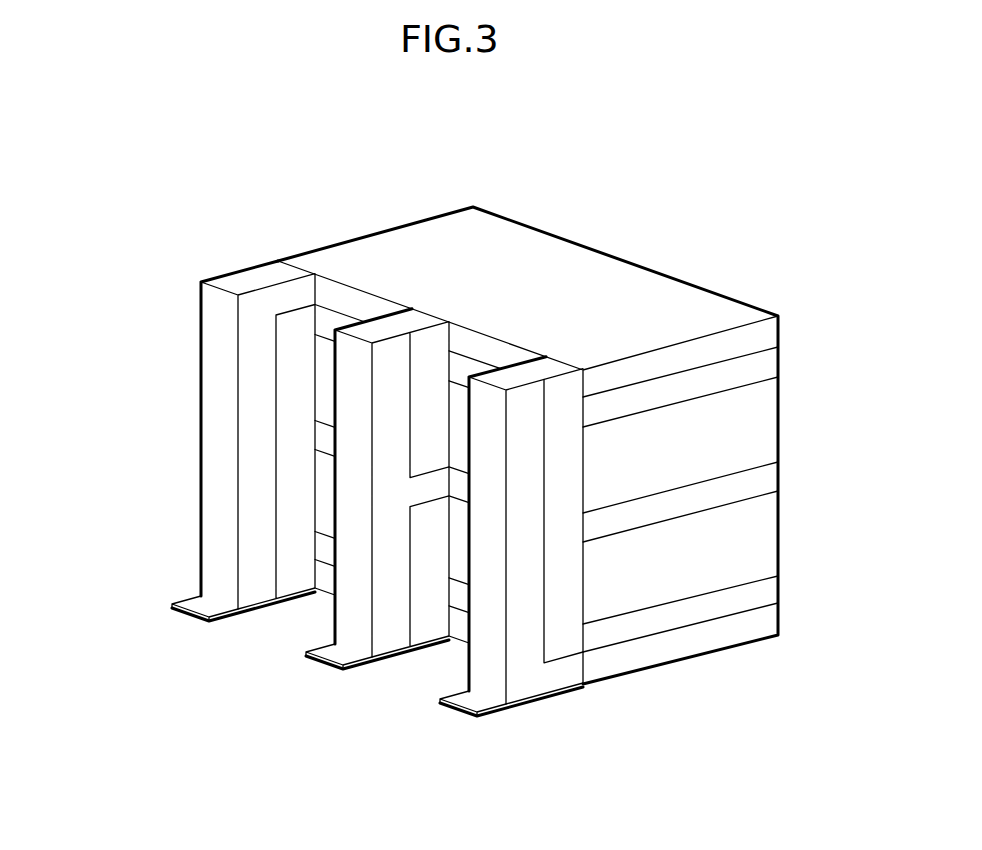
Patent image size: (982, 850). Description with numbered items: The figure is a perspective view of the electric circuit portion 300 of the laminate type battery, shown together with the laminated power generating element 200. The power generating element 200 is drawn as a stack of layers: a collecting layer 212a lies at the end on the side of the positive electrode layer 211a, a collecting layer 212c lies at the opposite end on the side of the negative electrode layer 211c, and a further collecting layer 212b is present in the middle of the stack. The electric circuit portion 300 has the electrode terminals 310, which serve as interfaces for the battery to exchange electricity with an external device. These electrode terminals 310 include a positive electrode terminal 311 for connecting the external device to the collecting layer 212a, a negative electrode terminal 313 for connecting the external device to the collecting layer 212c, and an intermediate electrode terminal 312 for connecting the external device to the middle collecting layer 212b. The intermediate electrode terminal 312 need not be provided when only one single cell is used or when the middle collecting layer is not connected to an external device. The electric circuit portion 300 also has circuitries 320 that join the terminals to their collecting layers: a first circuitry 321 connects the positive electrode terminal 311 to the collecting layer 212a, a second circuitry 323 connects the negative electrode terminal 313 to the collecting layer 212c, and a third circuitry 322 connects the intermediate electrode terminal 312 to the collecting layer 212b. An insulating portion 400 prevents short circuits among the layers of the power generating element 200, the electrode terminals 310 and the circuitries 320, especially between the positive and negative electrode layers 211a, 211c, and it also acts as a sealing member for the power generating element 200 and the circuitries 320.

The power generating element 200 is at (609, 257).
The collecting layer 212a is at (781, 331).
The positive electrode layer 211a is at (781, 361).
The collecting layer 212b is at (781, 478).
The negative electrode layer 211c is at (781, 593).
The collecting layer 212c is at (781, 623).
The electric circuit portion 300 is at (80, 405).
The circuitries 320 is at (136, 448).
The first circuitry 321 is at (280, 619).
The third circuitry 322 is at (410, 661).
The second circuitry 323 is at (546, 696).
The electrode terminals 310 is at (136, 648).
The positive electrode terminal 311 is at (199, 605).
The intermediate electrode terminal 312 is at (310, 668).
The negative electrode terminal 313 is at (455, 706).
The insulating portion 400 is at (565, 632).